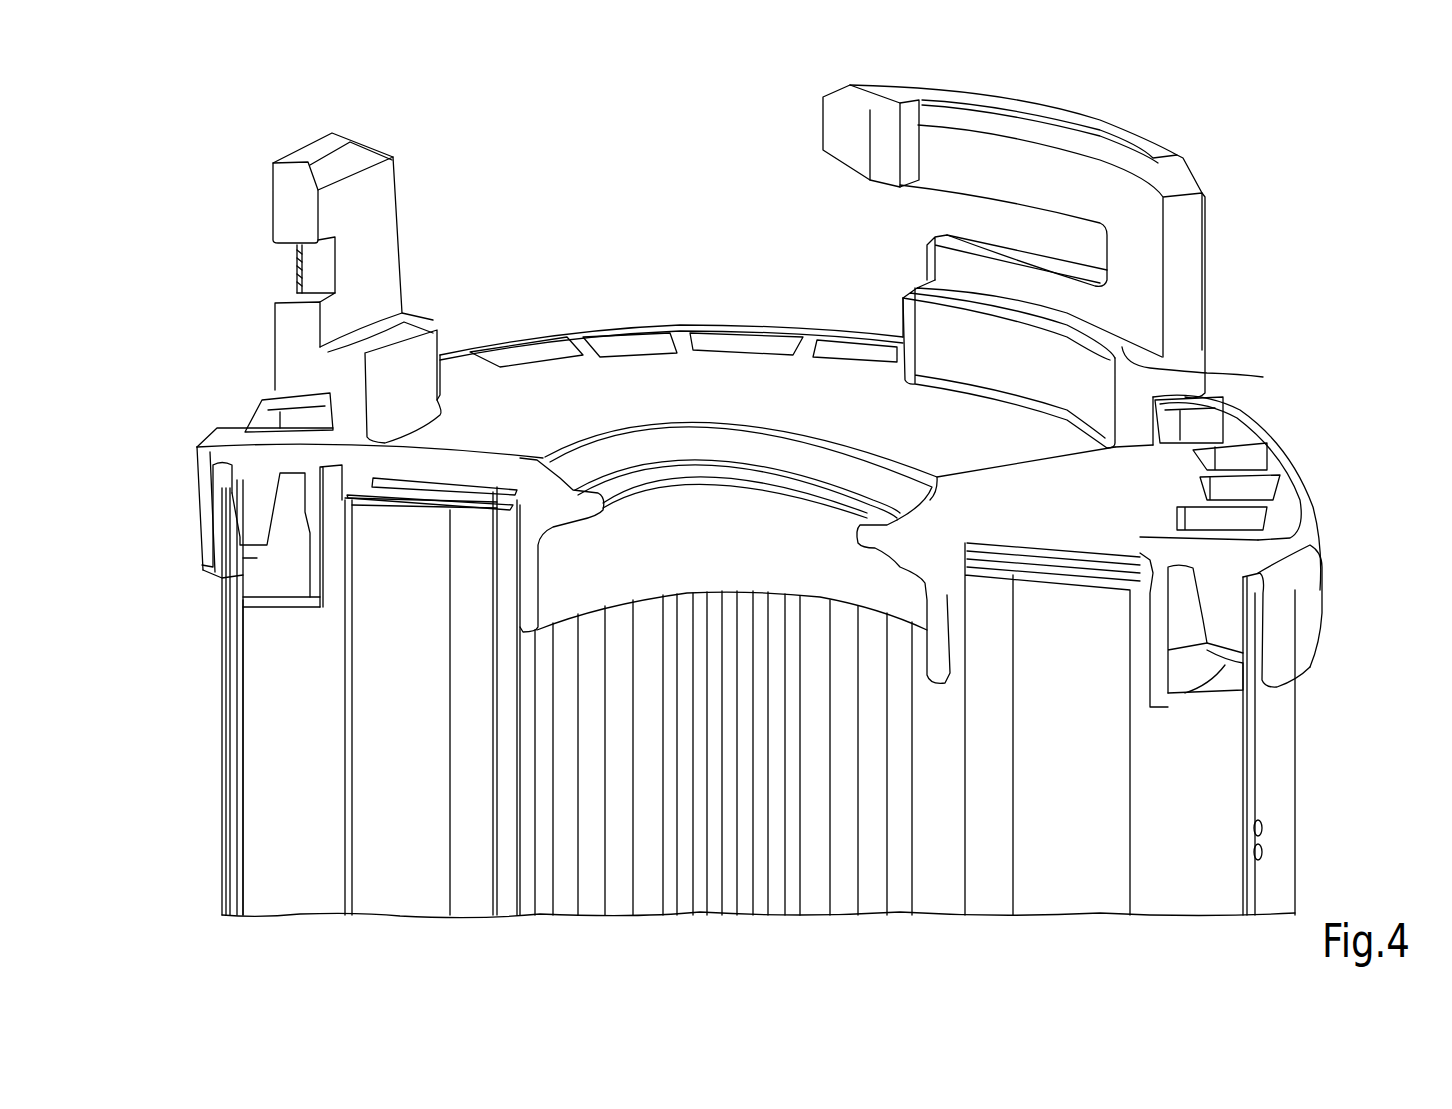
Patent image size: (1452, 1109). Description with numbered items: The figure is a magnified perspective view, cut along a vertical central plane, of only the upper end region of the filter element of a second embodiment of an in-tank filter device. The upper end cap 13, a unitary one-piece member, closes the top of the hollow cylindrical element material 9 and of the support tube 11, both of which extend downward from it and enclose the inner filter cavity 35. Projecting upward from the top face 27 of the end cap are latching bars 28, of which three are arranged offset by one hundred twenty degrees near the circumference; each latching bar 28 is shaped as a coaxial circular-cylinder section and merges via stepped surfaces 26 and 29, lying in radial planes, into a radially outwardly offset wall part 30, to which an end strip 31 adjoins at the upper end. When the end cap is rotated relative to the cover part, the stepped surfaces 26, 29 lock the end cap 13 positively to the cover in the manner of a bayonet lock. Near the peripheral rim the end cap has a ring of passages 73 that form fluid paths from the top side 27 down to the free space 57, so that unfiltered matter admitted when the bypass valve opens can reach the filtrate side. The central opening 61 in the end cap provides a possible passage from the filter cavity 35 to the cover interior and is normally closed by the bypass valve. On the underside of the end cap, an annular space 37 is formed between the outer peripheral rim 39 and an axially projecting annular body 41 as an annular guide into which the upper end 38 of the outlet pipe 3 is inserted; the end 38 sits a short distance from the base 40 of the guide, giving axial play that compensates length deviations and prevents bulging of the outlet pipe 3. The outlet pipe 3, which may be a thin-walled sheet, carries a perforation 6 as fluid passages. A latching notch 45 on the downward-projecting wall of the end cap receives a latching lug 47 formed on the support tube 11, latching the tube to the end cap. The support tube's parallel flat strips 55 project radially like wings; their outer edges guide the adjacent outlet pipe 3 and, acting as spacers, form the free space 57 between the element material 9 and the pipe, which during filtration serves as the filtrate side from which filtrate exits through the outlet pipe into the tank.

The outlet pipe 3 is at (230, 715).
The perforation 6 is at (1263, 852).
The element material 9 is at (395, 738).
The support tube 11 is at (1140, 655).
The upper end cap 13 is at (250, 445).
The stepped surface 26 is at (280, 392).
The top face 27 is at (522, 395).
The latching bar 28 is at (245, 272).
The stepped surface 29 is at (405, 318).
The wall part 30 is at (385, 225).
The end strip 31 is at (290, 200).
The filter cavity 35 is at (780, 752).
The annular space 37 is at (223, 505).
The upper end 38 is at (1272, 596).
The outer peripheral rim 39 is at (213, 488).
The base 40 is at (1260, 560).
The annular body 41 is at (1220, 630).
The latching notch 45 is at (322, 523).
The latching lug 47 is at (320, 500).
The flat strip 55 is at (255, 618).
The free space 57 is at (250, 558).
The central opening 61 is at (603, 507).
The passages 73 is at (730, 330).